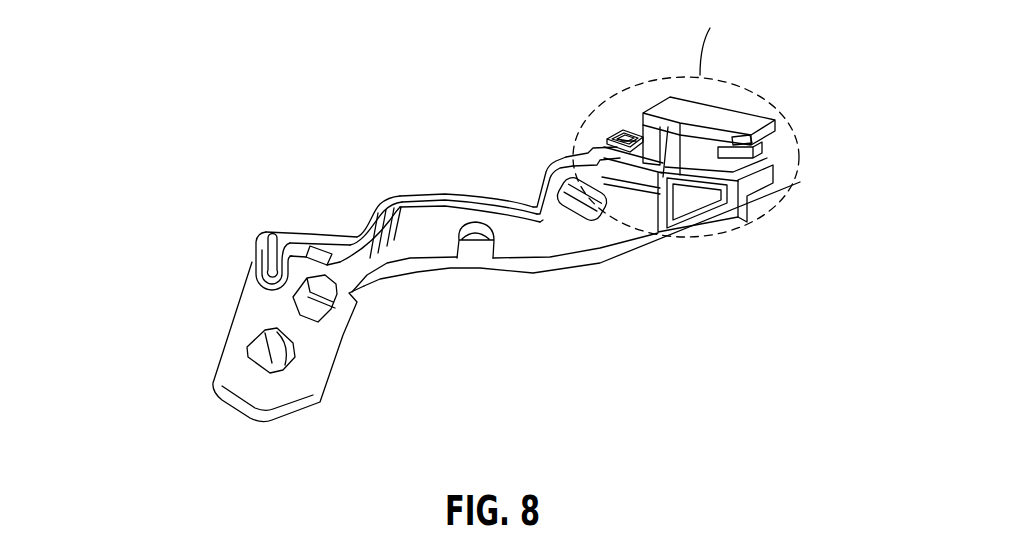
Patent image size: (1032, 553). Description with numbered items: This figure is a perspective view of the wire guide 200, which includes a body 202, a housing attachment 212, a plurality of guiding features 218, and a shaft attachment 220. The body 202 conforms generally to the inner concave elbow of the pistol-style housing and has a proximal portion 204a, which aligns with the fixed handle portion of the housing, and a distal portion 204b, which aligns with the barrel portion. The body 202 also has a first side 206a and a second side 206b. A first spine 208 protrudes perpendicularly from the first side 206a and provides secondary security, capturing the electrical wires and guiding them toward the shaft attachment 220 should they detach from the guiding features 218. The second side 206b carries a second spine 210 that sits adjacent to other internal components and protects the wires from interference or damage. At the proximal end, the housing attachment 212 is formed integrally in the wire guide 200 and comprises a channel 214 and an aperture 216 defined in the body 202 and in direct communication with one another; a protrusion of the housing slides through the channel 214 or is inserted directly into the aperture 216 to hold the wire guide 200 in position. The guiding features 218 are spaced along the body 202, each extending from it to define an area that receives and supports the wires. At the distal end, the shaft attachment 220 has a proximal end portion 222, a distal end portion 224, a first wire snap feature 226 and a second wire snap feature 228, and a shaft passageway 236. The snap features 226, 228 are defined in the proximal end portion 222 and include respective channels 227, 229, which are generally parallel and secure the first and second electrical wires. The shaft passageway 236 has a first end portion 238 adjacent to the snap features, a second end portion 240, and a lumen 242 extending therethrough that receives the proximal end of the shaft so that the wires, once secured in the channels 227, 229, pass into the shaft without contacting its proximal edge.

The wire guide 200 is at (332, 101).
The body 202 is at (226, 326).
The proximal portion 204a is at (201, 375).
The distal portion 204b is at (779, 172).
The first side 206a is at (452, 277).
The second side 206b is at (398, 176).
The first spine 208 is at (266, 421).
The second spine 210 is at (473, 190).
The housing attachment 212 is at (259, 247).
The channel 214 is at (283, 230).
The aperture 216 is at (257, 273).
The guiding feature 218 is at (330, 311).
The shaft attachment 220 is at (752, 88).
The proximal end portion 222 is at (563, 159).
The distal end portion 224 is at (785, 122).
The first wire snap feature 226 is at (600, 133).
The channel 227 is at (608, 128).
The second wire snap feature 228 is at (631, 128).
The channel 229 is at (620, 125).
The shaft passageway 236 is at (694, 191).
The first end portion 238 is at (655, 95).
The second end portion 240 is at (755, 179).
The lumen 242 is at (768, 150).